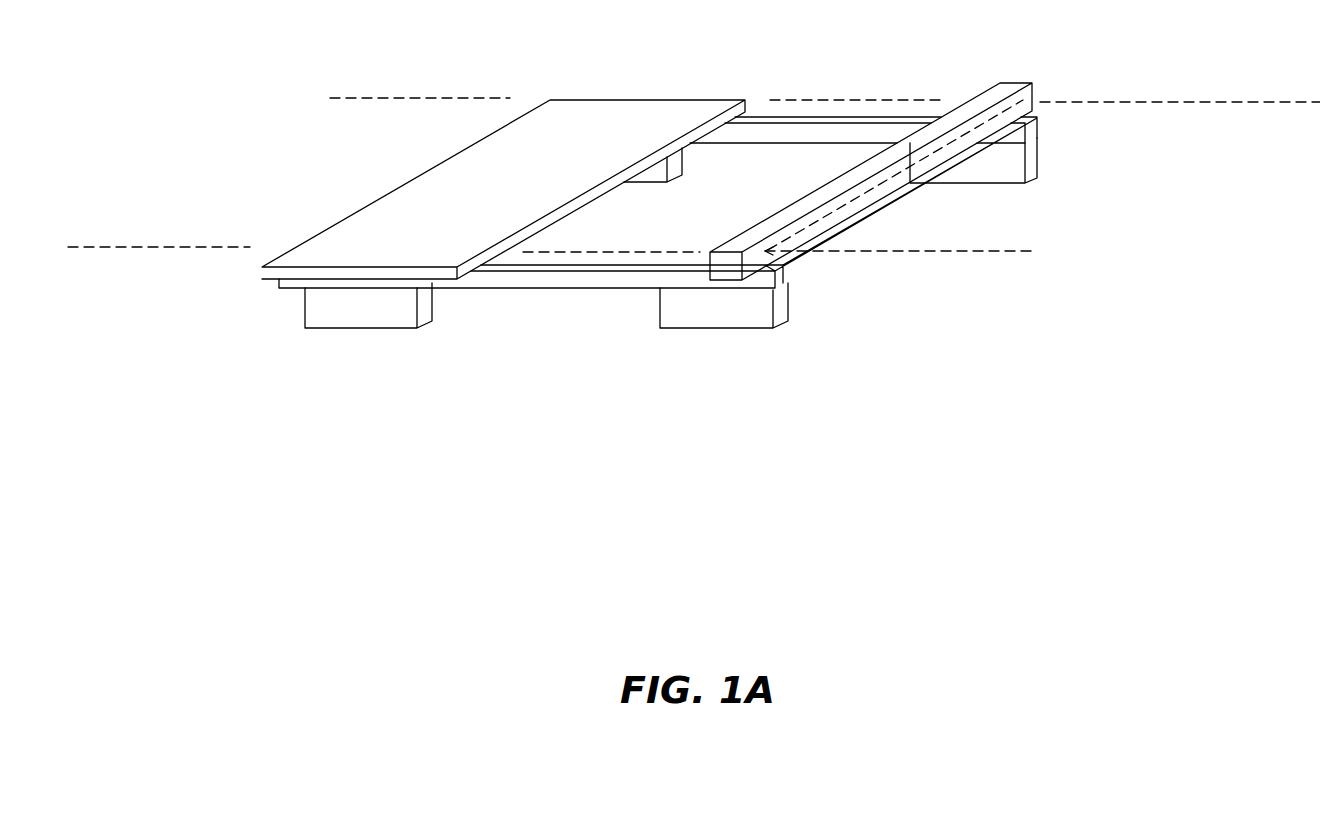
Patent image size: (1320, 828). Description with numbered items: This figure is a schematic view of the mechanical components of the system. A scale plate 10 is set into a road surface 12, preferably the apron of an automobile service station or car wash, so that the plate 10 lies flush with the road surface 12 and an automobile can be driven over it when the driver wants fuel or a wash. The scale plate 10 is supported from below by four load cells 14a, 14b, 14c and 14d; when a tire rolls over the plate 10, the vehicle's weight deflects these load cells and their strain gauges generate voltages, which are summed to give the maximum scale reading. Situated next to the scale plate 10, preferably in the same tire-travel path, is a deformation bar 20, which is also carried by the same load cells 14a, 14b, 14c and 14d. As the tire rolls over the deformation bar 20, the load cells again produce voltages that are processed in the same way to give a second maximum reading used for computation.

The scale plate 10 is at (497, 173).
The road surface 12 is at (307, 179).
The load cell 14a is at (338, 330).
The load cell 14b is at (643, 184).
The load cell 14c is at (688, 330).
The load cell 14d is at (956, 186).
The deformation bar 20 is at (986, 103).